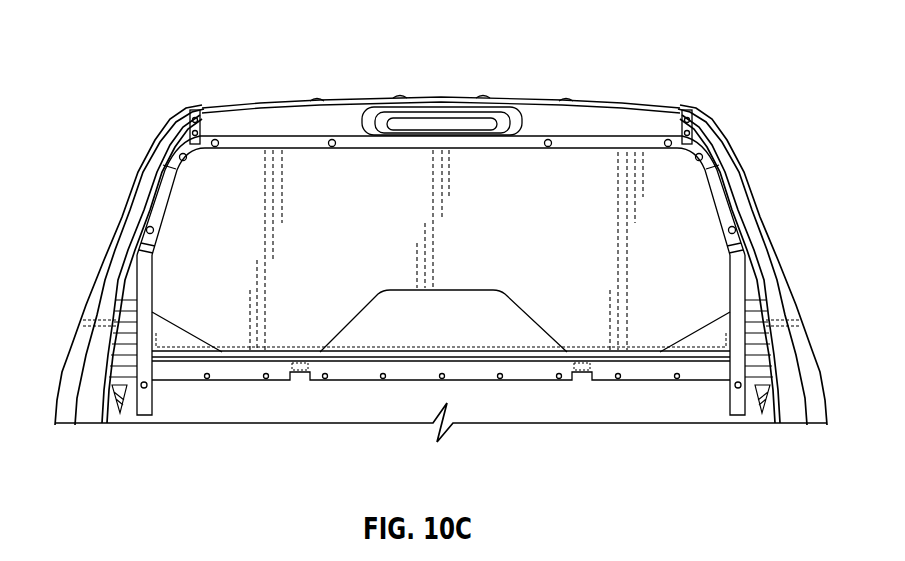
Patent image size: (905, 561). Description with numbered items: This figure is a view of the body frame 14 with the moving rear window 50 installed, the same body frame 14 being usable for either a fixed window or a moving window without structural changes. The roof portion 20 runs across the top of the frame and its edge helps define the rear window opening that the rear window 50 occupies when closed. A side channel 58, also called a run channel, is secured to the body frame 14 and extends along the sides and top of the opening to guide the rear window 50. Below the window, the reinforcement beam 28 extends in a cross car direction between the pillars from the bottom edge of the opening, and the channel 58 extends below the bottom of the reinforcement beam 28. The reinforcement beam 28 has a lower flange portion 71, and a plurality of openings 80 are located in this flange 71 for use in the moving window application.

The body frame 14 is at (656, 40).
The roof portion 20 is at (300, 120).
The side channel 58 is at (170, 187).
The rear window 50 is at (553, 204).
The reinforcement beam 28 is at (530, 355).
The lower flange portion 71 is at (500, 400).
The openings 80 is at (207, 380).